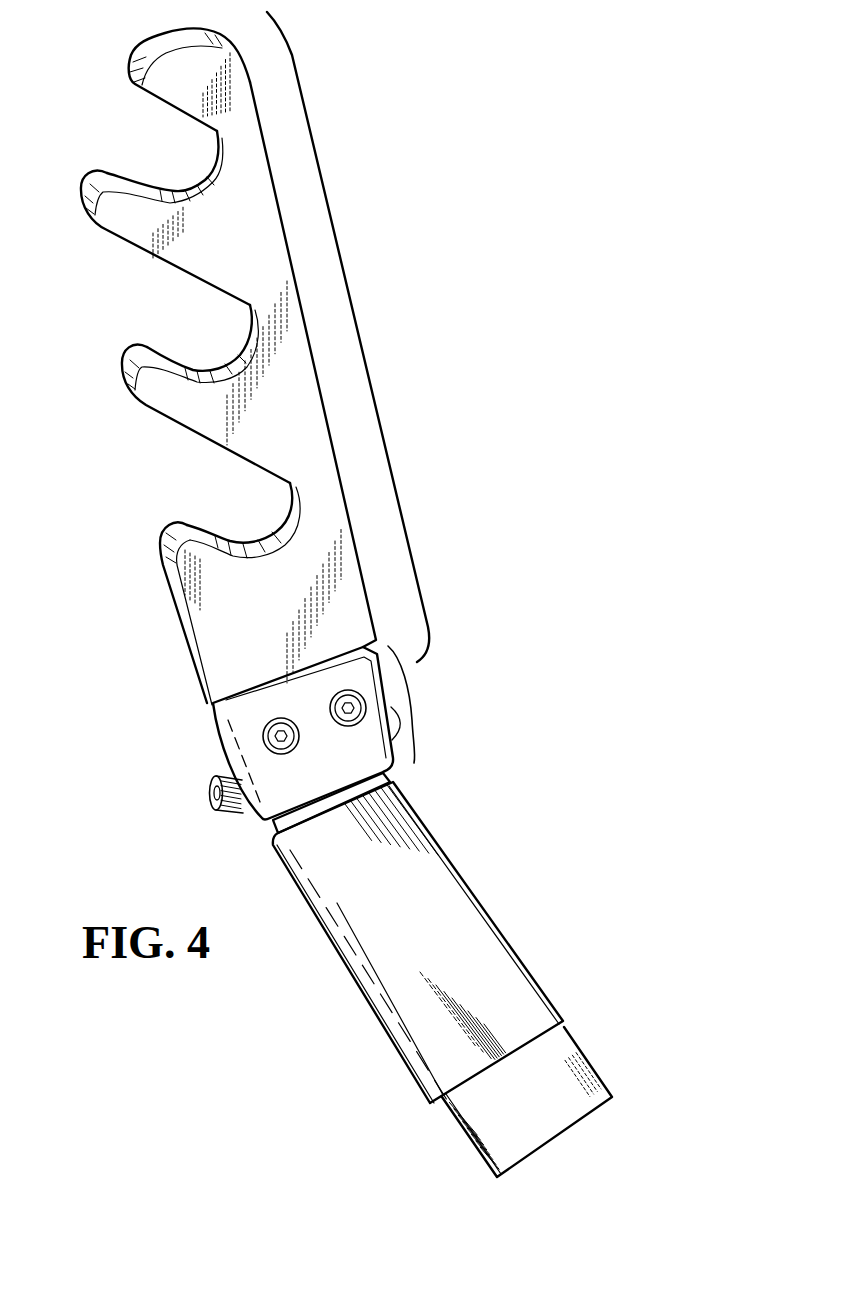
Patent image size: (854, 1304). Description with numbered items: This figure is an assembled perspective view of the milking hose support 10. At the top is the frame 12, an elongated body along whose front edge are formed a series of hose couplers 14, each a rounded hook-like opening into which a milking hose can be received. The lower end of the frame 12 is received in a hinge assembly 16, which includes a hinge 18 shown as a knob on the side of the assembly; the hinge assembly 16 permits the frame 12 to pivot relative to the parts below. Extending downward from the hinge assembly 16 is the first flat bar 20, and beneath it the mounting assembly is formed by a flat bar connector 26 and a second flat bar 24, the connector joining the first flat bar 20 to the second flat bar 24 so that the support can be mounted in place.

The milking hose support 10 is at (510, 91).
The frame 12 is at (358, 330).
The hose coupler 14 is at (245, 333).
The hinge assembly 16 is at (406, 703).
The hinge 18 is at (212, 792).
The first flat bar 20 is at (265, 830).
The second flat bar 24 is at (552, 1060).
The flat bar connector 26 is at (457, 912).